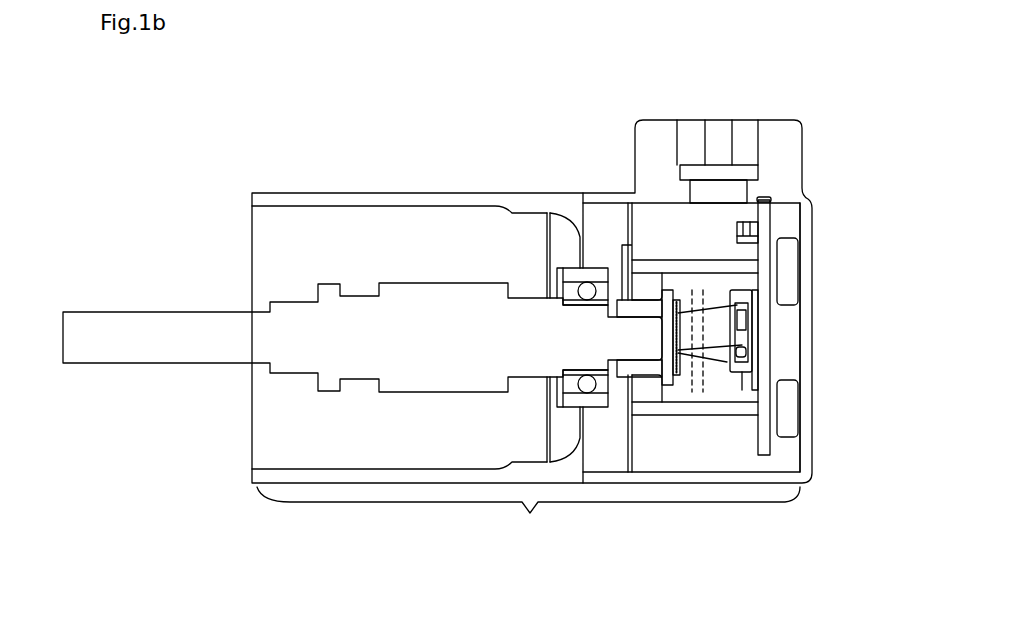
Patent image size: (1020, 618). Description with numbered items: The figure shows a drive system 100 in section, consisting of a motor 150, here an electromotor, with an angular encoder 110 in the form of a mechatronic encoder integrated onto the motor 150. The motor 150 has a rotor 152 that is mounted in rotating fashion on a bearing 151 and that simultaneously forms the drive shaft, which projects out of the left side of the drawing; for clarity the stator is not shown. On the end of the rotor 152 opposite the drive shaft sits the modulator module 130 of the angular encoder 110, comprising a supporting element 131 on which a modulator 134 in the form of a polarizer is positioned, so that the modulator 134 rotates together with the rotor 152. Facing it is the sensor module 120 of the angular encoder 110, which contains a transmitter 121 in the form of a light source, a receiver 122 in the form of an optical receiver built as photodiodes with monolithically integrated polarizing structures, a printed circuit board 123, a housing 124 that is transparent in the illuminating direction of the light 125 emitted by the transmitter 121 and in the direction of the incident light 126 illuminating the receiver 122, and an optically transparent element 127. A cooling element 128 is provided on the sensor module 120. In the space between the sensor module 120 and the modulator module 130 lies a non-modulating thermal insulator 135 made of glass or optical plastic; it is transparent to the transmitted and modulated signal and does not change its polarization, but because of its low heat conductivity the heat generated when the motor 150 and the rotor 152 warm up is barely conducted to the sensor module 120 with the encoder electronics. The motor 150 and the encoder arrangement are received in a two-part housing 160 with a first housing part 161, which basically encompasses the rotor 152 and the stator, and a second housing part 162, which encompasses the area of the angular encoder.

The drive system 100 is at (620, 515).
The angular encoder 110 is at (663, 203).
The sensor module 120 is at (743, 346).
The transmitter 121 is at (747, 354).
The receiver 122 is at (752, 302).
The printed circuit board 123 is at (765, 393).
The housing 124 is at (742, 375).
The light 125 is at (713, 353).
The incident light 126 is at (736, 275).
The optically transparent element 127 is at (733, 322).
The cooling element 128 is at (775, 322).
The modulator module 130 is at (653, 378).
The supporting element 131 is at (644, 298).
The modulator 134 is at (713, 320).
The non-modulating thermal insulator 135 is at (692, 372).
The motor 150 is at (208, 450).
The bearing 151 is at (587, 290).
The rotor 152 is at (157, 348).
The two-part housing 160 is at (532, 330).
The first housing part 161 is at (313, 200).
The second housing part 162 is at (803, 240).